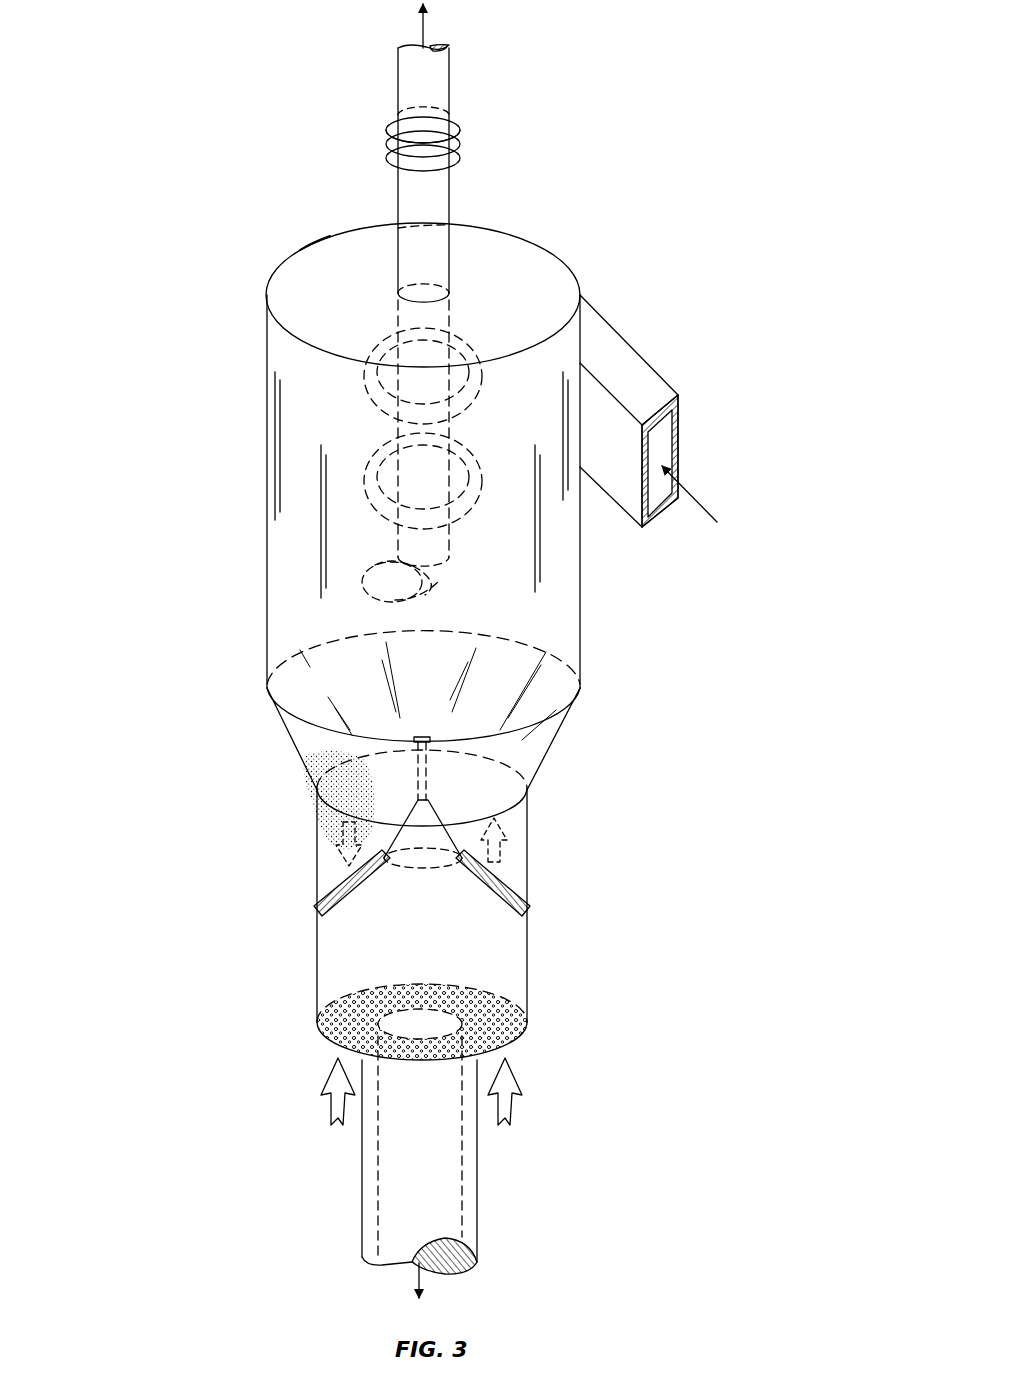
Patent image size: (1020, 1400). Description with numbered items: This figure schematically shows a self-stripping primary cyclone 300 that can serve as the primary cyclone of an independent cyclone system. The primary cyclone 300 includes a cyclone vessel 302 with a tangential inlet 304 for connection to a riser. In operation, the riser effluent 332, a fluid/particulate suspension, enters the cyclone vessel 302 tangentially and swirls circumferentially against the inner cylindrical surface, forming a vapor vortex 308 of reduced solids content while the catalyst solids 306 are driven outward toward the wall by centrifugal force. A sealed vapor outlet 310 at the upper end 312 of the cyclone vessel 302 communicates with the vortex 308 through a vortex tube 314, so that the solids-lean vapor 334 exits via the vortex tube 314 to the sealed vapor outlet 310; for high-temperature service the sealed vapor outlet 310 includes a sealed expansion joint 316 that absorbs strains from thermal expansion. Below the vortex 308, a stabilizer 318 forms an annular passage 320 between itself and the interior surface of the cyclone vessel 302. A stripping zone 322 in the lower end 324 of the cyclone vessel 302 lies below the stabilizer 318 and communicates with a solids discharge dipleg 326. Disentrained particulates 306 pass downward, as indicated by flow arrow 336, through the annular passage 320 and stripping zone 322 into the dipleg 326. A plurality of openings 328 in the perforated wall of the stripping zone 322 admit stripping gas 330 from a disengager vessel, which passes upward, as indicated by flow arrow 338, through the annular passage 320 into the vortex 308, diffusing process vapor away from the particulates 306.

The primary cyclone 300 is at (203, 98).
The cyclone vessel 302 is at (267, 362).
The tangential inlet 304 is at (648, 356).
The catalyst solids 306 is at (413, 1274).
The vapor vortex 308 is at (440, 580).
The sealed vapor outlet 310 is at (450, 205).
The upper end 312 is at (305, 258).
The vortex tube 314 is at (423, 428).
The sealed expansion joint 316 is at (462, 128).
The stabilizer 318 is at (432, 806).
The annular passage 320 is at (512, 877).
The stripping zone 322 is at (425, 917).
The lower end 324 is at (522, 1012).
The solids discharge dipleg 326 is at (362, 1190).
The openings 328 is at (420, 988).
The stripping gas 330 is at (505, 1120).
The riser effluent 332 is at (695, 502).
The solids-lean vapor 334 is at (424, 32).
The downward flow arrow 336 is at (318, 832).
The upward flow arrow 338 is at (520, 842).